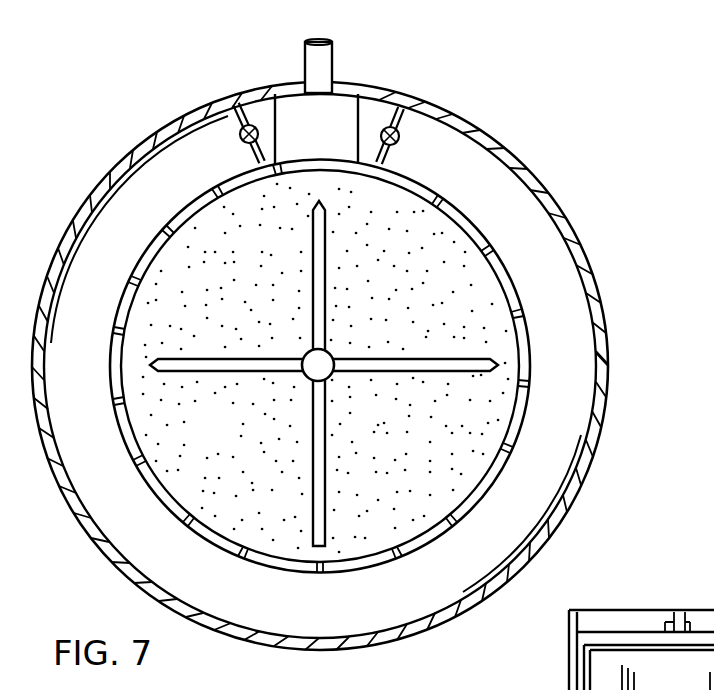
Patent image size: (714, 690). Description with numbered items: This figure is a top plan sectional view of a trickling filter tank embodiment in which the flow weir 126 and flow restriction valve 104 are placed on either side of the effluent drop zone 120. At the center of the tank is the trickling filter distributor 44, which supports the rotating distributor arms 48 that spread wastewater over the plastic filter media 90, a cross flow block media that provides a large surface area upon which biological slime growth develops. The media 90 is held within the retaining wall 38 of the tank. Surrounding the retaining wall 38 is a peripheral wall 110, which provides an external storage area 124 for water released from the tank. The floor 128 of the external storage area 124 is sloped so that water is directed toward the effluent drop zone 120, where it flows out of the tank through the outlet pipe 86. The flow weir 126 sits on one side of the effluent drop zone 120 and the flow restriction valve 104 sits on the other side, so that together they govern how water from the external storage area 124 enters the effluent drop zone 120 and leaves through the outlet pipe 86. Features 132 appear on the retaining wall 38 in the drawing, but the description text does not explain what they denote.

The retaining wall 38 is at (489, 488).
The trickling filter distributor 44 is at (318, 365).
The distributor arms 48 is at (326, 271).
The outlet pipe 86 is at (335, 67).
The plastic filter media 90 is at (231, 447).
The flow restriction valve 104 is at (247, 130).
The peripheral wall 110 is at (519, 158).
The effluent drop zone 120 is at (335, 117).
The external storage area 124 is at (542, 267).
The flow weir 126 is at (400, 115).
The floor 128 is at (131, 263).
The perforations 132 is at (527, 303).